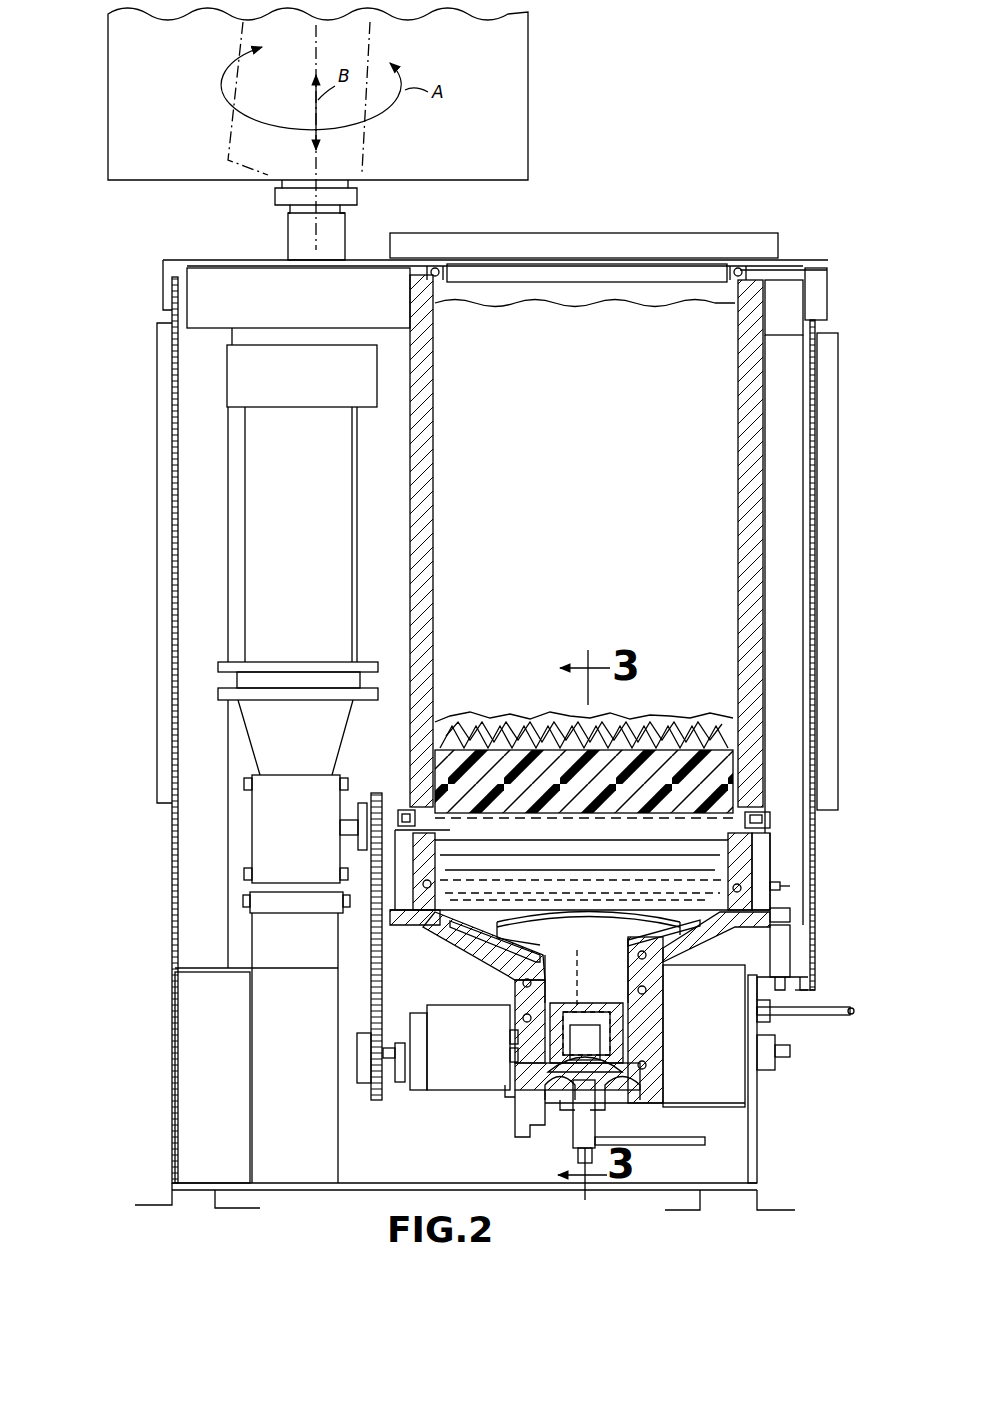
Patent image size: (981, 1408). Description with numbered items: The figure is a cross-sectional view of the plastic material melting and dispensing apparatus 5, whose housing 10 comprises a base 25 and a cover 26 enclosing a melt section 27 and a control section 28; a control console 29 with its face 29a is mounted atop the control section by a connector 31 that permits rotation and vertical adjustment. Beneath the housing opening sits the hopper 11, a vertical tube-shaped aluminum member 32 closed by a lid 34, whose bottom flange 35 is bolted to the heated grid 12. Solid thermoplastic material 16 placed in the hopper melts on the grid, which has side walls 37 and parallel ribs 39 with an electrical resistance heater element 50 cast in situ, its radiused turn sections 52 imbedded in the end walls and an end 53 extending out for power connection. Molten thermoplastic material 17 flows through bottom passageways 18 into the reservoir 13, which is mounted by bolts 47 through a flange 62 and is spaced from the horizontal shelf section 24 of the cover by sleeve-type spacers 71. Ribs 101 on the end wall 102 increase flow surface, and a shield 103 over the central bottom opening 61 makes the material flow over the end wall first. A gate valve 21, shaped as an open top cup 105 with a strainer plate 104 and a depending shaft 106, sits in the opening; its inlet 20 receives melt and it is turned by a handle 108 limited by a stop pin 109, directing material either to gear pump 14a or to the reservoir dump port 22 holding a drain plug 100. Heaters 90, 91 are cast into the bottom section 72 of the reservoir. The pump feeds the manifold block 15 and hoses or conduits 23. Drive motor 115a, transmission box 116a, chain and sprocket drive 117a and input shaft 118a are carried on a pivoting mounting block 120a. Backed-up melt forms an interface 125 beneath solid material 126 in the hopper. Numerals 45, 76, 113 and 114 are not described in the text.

The plastic material melting and dispensing apparatus 5 is at (787, 150).
The housing 10 is at (818, 530).
The hopper 11 is at (604, 490).
The heated grid 12 is at (782, 851).
The reservoir 13 is at (760, 948).
The gear pump 14a is at (477, 1073).
The manifold block 15 is at (730, 1090).
The solid thermoplastic material 16 is at (636, 722).
The molten thermoplastic material 17 is at (576, 832).
The bottom passageways 18 is at (520, 903).
The inlet 20 is at (610, 1000).
The gate valve 21 is at (632, 1046).
The reservoir dump port 22 is at (543, 1050).
The hoses or conduits 23 is at (850, 1016).
The horizontal shelf section 24 is at (348, 982).
The base 25 is at (170, 1110).
The cover 26 is at (172, 898).
The melt section 27 is at (790, 445).
The control section 28 is at (827, 388).
The control console 29 is at (372, 160).
The face of the console 29a is at (228, 136).
The connector 31 is at (256, 213).
The vertical tube-shaped aluminum member 32 is at (735, 305).
The lid 34 is at (642, 238).
The flange 35 is at (772, 822).
The side walls 37 is at (770, 862).
The ribs 39 is at (698, 878).
The fluid line 45 is at (478, 878).
The bolts 47 is at (765, 820).
The electrical resistance heater element 50 is at (668, 885).
The radiused turn sections 52 is at (433, 858).
The end of heating element 53 is at (780, 892).
The central bottom opening 61 is at (626, 1018).
The flange 62 is at (790, 918).
The sleeve-type spacer 71 is at (765, 962).
The bottom section 72 is at (668, 1078).
The axis 76 is at (585, 946).
The heater 90 is at (660, 1060).
The heater 91 is at (514, 982).
The drain plug 100 is at (517, 1052).
The ribs 101 is at (505, 950).
The end wall 102 is at (528, 946).
The shield 103 is at (577, 920).
The strainer plate 104 is at (558, 1000).
The open top cup 105 is at (512, 1034).
The shaft 106 is at (578, 1128).
The handle 108 is at (682, 1148).
The stop pin 109 is at (612, 1105).
The fitting 113 is at (665, 1025).
The vertical bar 114 is at (758, 1152).
The drive motor 115a is at (304, 550).
The transmission box 116a is at (304, 836).
The chain and sprocket drive 117a is at (380, 790).
The input shaft 118a is at (388, 1078).
The mounting block 120a is at (250, 838).
The interface 125 is at (745, 742).
The solid material 126 is at (712, 778).